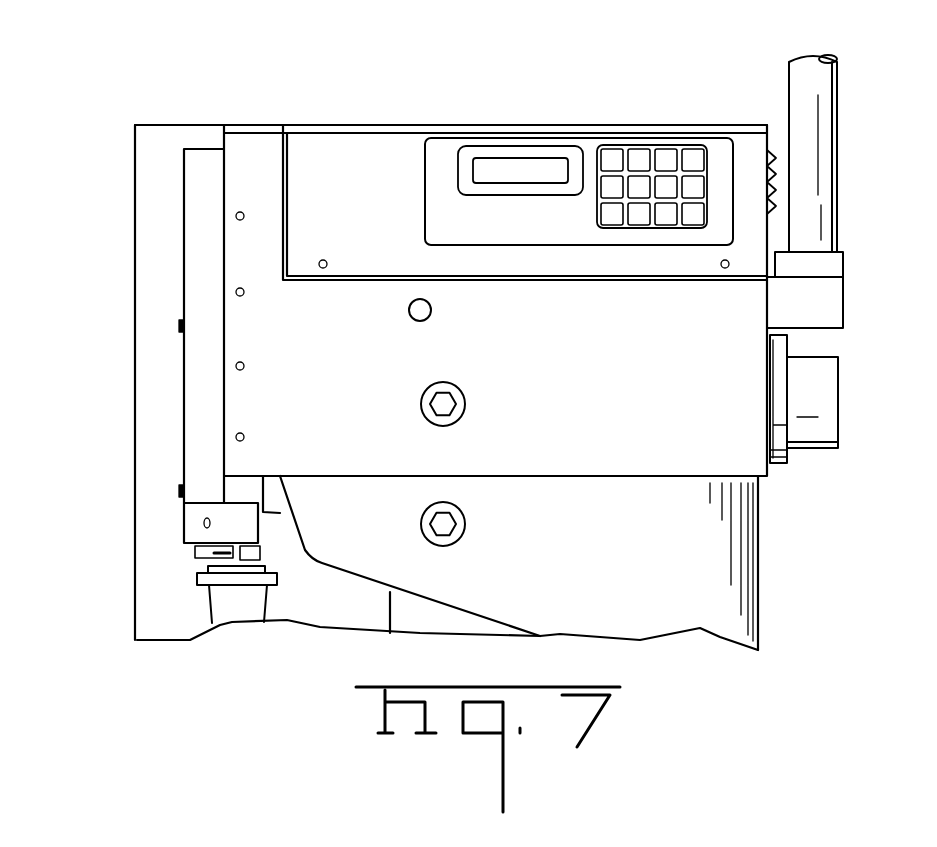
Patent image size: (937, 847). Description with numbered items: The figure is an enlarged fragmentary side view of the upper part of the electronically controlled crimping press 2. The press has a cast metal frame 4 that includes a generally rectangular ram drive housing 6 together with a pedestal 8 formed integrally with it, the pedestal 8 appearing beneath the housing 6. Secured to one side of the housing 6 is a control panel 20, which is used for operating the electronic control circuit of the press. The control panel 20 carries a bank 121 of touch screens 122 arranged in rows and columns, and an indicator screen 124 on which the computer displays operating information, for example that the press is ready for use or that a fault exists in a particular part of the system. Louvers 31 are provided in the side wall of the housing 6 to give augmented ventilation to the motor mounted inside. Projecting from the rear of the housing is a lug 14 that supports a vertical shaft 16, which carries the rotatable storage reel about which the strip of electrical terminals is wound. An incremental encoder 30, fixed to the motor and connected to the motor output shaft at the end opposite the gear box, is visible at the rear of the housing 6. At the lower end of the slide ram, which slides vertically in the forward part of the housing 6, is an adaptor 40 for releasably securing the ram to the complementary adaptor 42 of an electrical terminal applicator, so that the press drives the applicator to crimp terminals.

The electronically controlled crimping press 2 is at (751, 114).
The cast metal frame 4 is at (771, 525).
The ram drive housing 6 is at (132, 261).
The pedestal 8 is at (340, 612).
The lug 14 is at (818, 311).
The vertical shaft 16 is at (828, 162).
The control panel 20 is at (526, 129).
The incremental encoder 30 is at (838, 390).
The louvers 31 is at (773, 157).
The adaptor 40 is at (190, 528).
The complementary adaptor 42 is at (193, 591).
The bank of touch screens 121 is at (665, 237).
The touch screens 122 is at (693, 158).
The indicator screen 124 is at (531, 180).